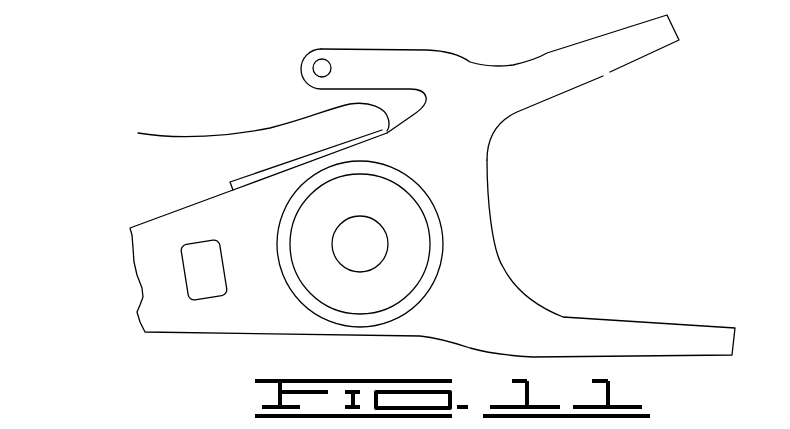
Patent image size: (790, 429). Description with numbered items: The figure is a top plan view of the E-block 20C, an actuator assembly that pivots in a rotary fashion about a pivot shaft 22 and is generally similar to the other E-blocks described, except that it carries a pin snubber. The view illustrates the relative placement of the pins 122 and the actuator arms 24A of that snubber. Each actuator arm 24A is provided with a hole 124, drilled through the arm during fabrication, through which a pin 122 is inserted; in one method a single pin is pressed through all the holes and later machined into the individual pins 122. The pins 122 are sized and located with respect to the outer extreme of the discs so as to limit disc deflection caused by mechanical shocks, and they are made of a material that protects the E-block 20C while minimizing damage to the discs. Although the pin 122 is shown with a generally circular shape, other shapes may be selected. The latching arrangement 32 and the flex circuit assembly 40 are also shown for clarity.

The E-block 20C is at (217, 80).
The latching arrangement 32 is at (348, 58).
The flex circuit assembly 40 is at (213, 138).
The actuator arm 24A is at (173, 227).
The pivot shaft 22 is at (370, 248).
The pin 122 is at (195, 270).
The hole 124 is at (200, 303).